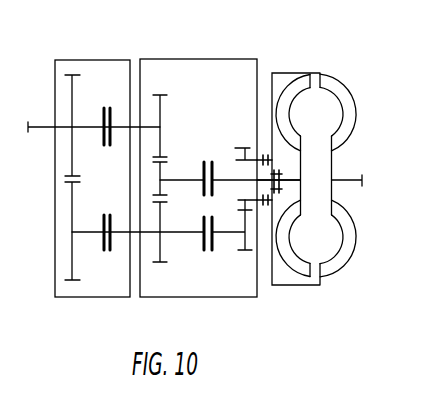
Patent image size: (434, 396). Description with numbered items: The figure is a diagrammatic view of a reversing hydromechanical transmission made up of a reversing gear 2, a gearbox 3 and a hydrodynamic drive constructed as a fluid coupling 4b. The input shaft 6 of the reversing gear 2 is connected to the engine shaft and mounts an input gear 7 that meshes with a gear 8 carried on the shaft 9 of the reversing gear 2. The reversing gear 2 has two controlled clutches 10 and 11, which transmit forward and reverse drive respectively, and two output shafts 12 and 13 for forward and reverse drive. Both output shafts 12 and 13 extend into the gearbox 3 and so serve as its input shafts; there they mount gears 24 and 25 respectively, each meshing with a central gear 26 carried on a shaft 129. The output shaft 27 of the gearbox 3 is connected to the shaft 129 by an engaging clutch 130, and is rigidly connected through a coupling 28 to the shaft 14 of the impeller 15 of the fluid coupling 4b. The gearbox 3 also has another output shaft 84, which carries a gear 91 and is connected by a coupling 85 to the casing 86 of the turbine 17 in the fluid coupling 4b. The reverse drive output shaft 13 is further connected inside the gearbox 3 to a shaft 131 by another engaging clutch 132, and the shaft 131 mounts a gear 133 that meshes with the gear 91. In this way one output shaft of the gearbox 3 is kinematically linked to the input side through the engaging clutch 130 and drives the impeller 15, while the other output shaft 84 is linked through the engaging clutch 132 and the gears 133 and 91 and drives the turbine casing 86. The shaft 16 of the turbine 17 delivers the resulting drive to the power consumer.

The reversing gear 2 is at (76, 300).
The gearbox 3 is at (146, 56).
The fluid coupling 4b is at (299, 66).
The input shaft 6 is at (40, 127).
The input gear 7 is at (70, 78).
The gear 8 is at (72, 210).
The shaft 9 is at (72, 237).
The controlled clutch 10 is at (101, 105).
The controlled clutch 11 is at (106, 258).
The output shaft 12 is at (112, 126).
The output shaft 13 is at (136, 238).
The impeller shaft 14 is at (285, 187).
The impeller 15 is at (314, 86).
The turbine shaft 16 is at (346, 180).
The turbine 17 is at (345, 230).
The gear 24 is at (163, 110).
The gear 25 is at (158, 266).
The central gear 26 is at (167, 168).
The output shaft 27 is at (227, 173).
The coupling 28 is at (283, 174).
The output shaft 84 is at (247, 199).
The coupling 85 is at (265, 205).
The casing 86 is at (292, 200).
The gear 91 is at (247, 146).
The shaft 129 is at (183, 173).
The engaging clutch 130 is at (214, 155).
The shaft 131 is at (214, 256).
The engaging clutch 132 is at (208, 253).
The gear 133 is at (249, 252).